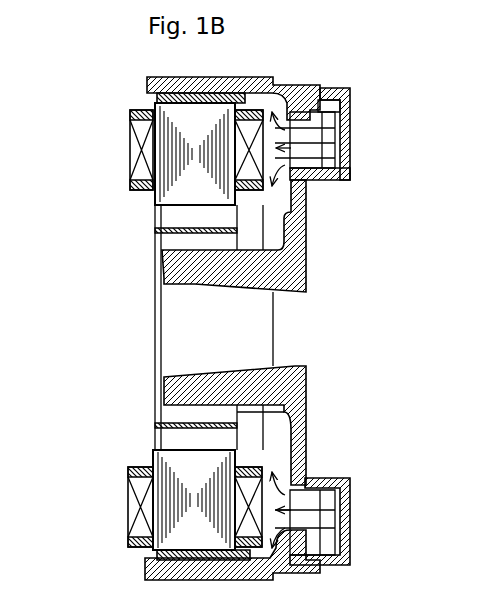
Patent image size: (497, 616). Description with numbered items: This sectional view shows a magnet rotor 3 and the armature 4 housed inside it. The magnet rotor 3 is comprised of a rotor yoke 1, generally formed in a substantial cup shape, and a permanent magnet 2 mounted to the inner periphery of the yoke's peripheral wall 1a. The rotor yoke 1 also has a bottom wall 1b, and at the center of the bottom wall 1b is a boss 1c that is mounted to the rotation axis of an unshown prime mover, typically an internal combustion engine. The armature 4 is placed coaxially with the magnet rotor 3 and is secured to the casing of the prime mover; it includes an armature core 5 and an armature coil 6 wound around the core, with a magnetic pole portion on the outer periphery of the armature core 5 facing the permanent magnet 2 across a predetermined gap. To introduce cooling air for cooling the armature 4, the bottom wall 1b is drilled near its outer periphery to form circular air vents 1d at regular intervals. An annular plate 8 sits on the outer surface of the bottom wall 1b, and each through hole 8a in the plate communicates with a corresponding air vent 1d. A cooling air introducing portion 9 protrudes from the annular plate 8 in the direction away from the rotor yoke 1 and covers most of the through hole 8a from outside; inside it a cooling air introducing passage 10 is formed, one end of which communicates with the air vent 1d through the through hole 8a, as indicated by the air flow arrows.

The rotor yoke 1 is at (254, 76).
The peripheral wall 1a is at (183, 77).
The bottom wall 1b is at (307, 235).
The boss 1c is at (168, 258).
The air vent 1d is at (335, 180).
The permanent magnet 2 is at (158, 96).
The magnet rotor 3 is at (293, 76).
The armature 4 is at (147, 199).
The armature core 5 is at (165, 462).
The armature coil 6 is at (130, 505).
The annular plate 8 is at (344, 324).
The through hole 8a is at (316, 104).
The cooling air introducing portion 9 is at (355, 152).
The cooling air introducing passage 10 is at (336, 126).